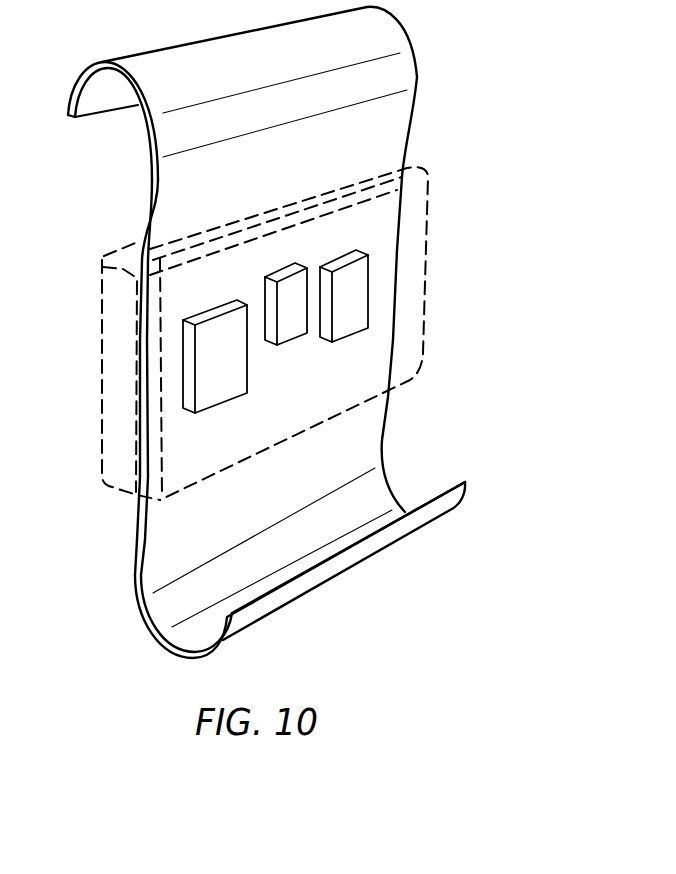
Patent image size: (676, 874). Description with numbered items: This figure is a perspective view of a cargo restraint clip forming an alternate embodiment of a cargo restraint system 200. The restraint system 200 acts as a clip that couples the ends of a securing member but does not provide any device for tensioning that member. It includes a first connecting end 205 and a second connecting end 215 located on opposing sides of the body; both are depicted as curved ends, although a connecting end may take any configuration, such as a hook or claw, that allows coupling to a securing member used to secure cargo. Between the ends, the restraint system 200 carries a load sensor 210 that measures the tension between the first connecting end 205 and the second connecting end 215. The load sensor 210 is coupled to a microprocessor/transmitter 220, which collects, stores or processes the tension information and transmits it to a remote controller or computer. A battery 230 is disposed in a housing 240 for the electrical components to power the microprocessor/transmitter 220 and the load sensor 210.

The cargo restraint system 200 is at (282, 337).
The first connecting end 205 is at (105, 127).
The load sensor 210 is at (290, 285).
The second connecting end 215 is at (165, 636).
The microprocessor/transmitter 220 is at (350, 330).
The battery 230 is at (217, 395).
The housing 240 is at (412, 275).